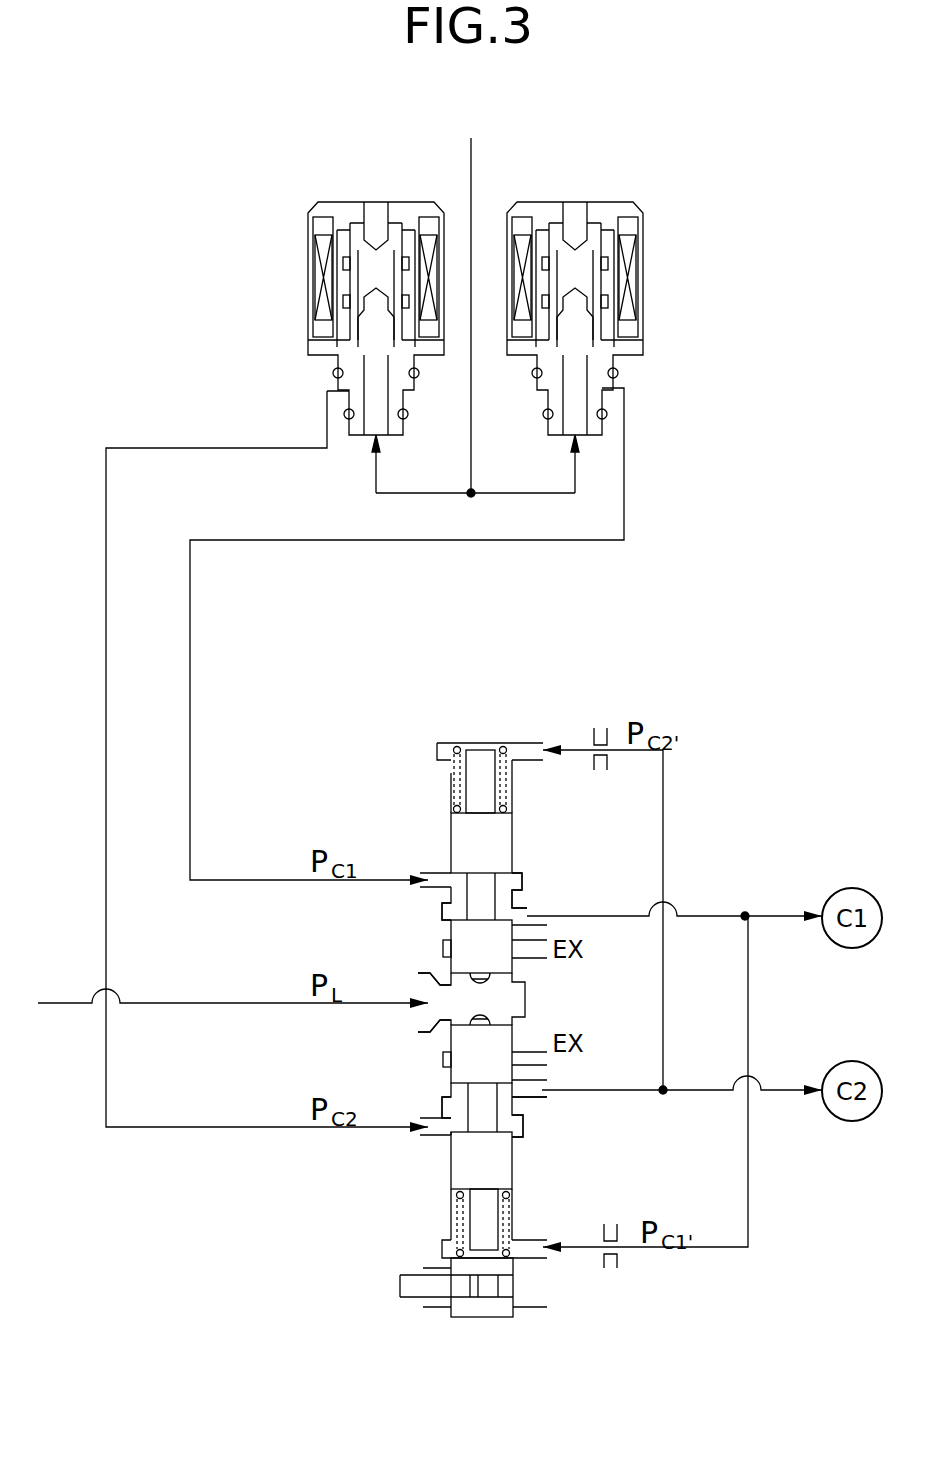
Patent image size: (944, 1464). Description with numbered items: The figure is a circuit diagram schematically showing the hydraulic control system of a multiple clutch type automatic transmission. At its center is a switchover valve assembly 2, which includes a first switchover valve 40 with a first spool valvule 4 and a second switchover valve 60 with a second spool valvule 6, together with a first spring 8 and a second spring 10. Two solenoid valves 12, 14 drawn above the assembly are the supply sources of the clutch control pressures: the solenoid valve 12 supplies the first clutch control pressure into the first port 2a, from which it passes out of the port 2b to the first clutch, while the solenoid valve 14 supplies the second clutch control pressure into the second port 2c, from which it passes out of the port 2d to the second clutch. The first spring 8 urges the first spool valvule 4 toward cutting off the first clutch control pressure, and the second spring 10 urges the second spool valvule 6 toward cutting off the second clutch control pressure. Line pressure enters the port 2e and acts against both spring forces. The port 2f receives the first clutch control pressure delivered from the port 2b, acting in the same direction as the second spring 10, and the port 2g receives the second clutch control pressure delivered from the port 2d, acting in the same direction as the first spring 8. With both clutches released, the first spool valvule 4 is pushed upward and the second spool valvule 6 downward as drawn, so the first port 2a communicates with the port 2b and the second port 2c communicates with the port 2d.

The switchover valve assembly 2 is at (447, 728).
The first port 2a is at (436, 870).
The port 2b is at (523, 910).
The second port 2c is at (437, 1113).
The port 2d is at (532, 1092).
The port 2e is at (427, 990).
The port 2f is at (535, 1252).
The port 2g is at (520, 745).
The first spool valvule 4 is at (500, 832).
The second spool valvule 6 is at (497, 1042).
The first spring 8 is at (450, 773).
The second spring 10 is at (460, 1212).
The solenoid valve 12 is at (643, 293).
The solenoid valve 14 is at (307, 293).
The first switchover valve 40 is at (430, 905).
The second switchover valve 60 is at (430, 1143).